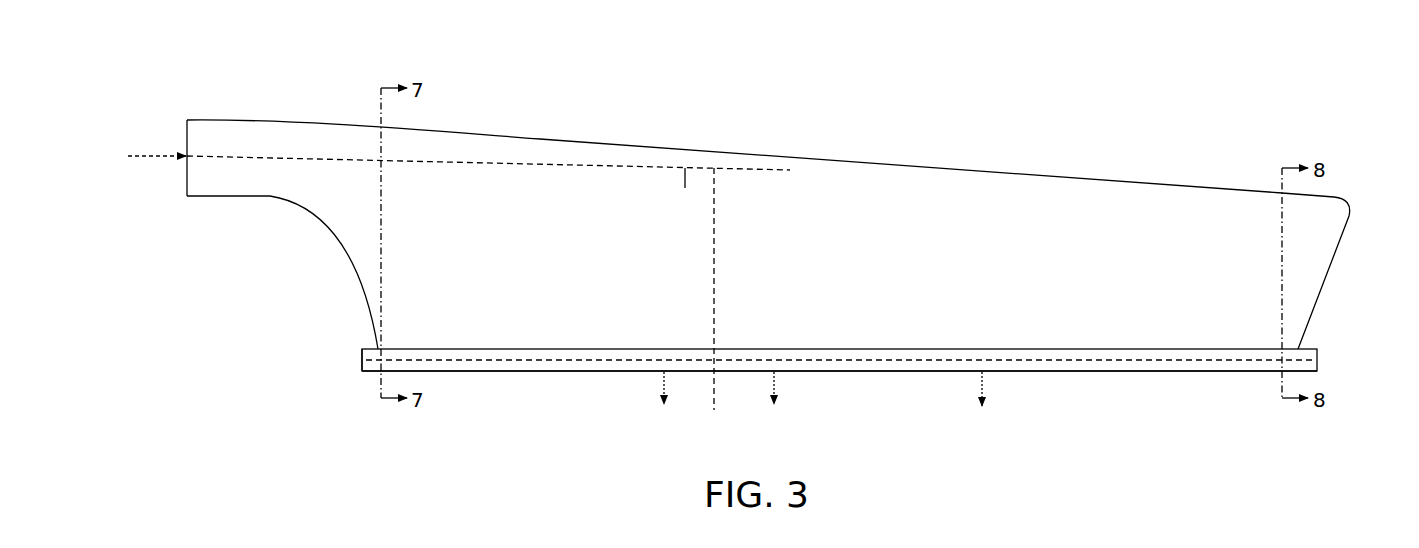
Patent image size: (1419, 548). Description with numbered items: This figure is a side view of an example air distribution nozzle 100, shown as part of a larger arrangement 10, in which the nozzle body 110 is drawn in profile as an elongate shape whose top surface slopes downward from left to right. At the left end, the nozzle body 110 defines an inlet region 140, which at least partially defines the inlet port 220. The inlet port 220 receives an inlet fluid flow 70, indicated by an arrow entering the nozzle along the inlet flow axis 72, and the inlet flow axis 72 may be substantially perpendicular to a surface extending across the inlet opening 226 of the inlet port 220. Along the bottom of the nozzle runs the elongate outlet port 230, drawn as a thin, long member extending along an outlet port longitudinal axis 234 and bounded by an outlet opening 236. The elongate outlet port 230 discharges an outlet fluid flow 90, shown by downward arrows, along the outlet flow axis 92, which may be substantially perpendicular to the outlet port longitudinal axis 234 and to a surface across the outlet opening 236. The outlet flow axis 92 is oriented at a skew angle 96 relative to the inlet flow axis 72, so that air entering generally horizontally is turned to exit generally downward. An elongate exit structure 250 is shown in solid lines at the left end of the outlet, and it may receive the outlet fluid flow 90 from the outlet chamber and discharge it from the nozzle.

The assembly 10 is at (231, 391).
The air distribution nozzle 100 is at (332, 69).
The nozzle body 110 is at (331, 121).
The inlet region 140 is at (219, 171).
The inlet port 220 is at (172, 137).
The inlet opening 226 is at (184, 181).
The inlet fluid flow 70 is at (152, 159).
The inlet flow axis 72 is at (556, 165).
The outlet flow axis 92 is at (720, 260).
The skew angle 96 is at (713, 207).
The elongate outlet port 230 is at (493, 373).
The outlet port longitudinal axis 234 is at (1179, 362).
The outlet opening 236 is at (722, 381).
The elongate exit structure 250 is at (356, 360).
The outlet fluid flow 90 is at (982, 380).